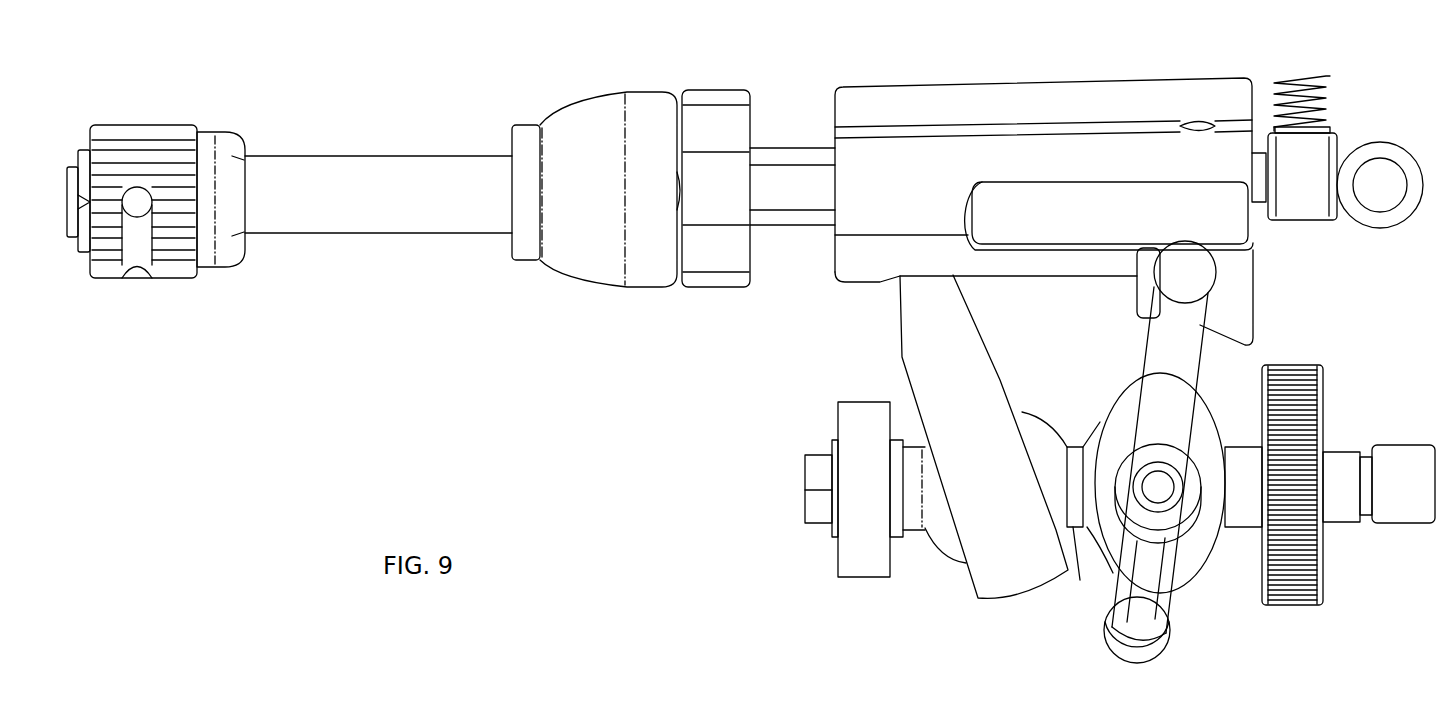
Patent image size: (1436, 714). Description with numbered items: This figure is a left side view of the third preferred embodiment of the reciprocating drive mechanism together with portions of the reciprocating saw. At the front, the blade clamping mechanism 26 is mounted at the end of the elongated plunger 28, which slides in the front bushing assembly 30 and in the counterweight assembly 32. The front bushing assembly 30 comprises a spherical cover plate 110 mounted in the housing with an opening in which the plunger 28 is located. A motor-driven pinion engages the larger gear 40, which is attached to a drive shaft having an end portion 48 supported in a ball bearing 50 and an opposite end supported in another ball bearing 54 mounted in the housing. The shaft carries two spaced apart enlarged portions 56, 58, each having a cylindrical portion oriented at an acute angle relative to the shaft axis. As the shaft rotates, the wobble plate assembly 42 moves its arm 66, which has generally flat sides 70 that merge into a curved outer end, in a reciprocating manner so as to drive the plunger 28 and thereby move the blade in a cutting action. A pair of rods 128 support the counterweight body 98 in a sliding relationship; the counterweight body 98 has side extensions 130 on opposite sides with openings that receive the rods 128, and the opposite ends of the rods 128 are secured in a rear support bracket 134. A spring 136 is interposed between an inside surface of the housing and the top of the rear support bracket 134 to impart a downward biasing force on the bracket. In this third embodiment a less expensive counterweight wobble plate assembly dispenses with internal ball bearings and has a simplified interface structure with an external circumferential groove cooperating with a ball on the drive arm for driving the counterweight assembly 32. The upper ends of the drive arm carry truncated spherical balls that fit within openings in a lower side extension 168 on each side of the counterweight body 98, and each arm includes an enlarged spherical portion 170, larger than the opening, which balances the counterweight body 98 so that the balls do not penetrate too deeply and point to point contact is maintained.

The blade clamping mechanism 26 is at (130, 125).
The plunger 28 is at (385, 200).
The front bushing assembly 30 is at (666, 155).
The counterweight assembly 32 is at (1128, 183).
The gear 40 is at (1293, 580).
The wobble plate assembly 42 is at (959, 472).
The end portion 48 is at (1362, 452).
The ball bearing 50 is at (1403, 498).
The ball bearing 54 is at (865, 555).
The enlarged portion 56 is at (945, 535).
The enlarged portion 58 is at (1090, 436).
The arm 66 is at (1023, 568).
The flat sides 70 is at (1008, 365).
The counterweight body 98 is at (898, 105).
The spherical cover plate 110 is at (593, 130).
The rods 128 is at (788, 190).
The side extensions 130 is at (868, 210).
The rear support bracket 134 is at (1303, 200).
The spring 136 is at (1308, 74).
The lower side extension 168 is at (1052, 212).
The enlarged spherical portion 170 is at (1182, 262).